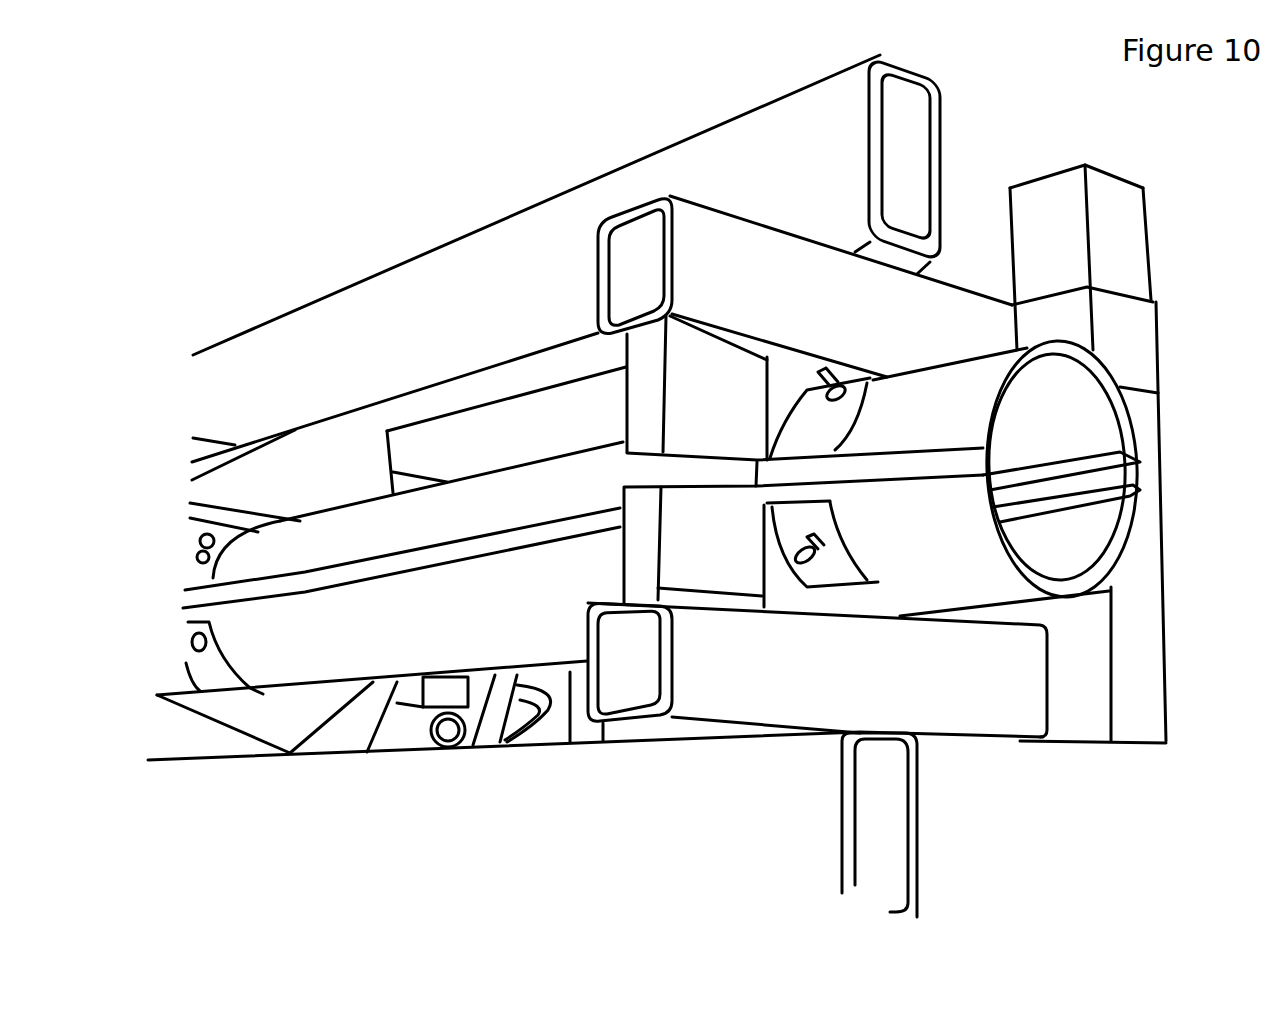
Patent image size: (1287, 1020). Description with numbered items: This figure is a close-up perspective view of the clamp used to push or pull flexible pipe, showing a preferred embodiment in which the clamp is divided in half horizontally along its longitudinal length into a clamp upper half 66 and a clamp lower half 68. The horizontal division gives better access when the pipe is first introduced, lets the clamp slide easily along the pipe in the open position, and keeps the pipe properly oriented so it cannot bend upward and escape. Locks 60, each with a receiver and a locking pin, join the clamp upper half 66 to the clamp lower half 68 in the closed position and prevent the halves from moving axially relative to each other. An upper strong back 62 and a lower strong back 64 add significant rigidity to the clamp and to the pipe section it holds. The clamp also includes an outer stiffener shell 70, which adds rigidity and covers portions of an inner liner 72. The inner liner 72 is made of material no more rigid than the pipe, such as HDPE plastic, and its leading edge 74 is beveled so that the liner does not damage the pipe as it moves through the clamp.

The locks 60 is at (640, 455).
The upper strong back 62 is at (447, 292).
The lower strong back 64 is at (768, 780).
The clamp upper half 66 is at (757, 277).
The clamp lower half 68 is at (802, 685).
The outer stiffener shell 70 is at (823, 557).
The inner liner 72 is at (947, 540).
The leading edge 74 is at (1131, 511).